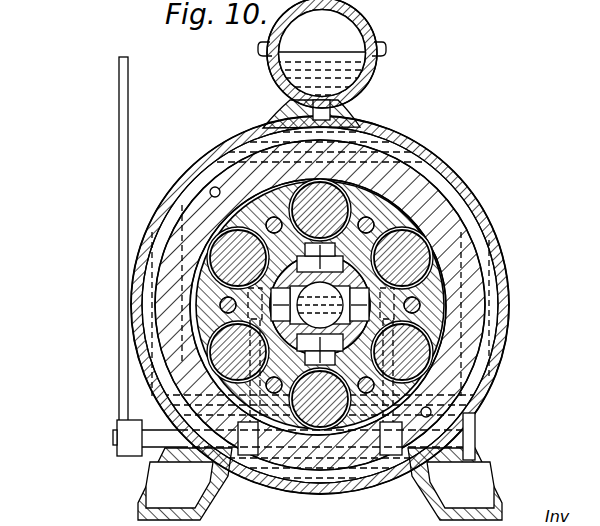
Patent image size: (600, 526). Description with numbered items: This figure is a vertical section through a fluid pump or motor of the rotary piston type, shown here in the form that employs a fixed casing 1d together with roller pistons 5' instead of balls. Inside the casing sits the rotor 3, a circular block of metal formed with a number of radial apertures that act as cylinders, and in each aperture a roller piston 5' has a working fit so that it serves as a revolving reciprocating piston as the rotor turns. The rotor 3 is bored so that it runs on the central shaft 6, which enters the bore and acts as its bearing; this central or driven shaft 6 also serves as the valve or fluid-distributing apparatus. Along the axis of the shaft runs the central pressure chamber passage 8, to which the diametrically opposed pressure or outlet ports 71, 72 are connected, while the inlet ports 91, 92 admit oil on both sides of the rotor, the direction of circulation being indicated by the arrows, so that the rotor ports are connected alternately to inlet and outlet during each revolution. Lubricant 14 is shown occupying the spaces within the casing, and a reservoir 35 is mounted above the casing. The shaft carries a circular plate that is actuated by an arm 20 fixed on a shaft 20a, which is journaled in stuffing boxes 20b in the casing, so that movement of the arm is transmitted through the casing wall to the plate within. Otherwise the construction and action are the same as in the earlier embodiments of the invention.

The fixed casing 1d is at (199, 160).
The lubricant 14 is at (372, 172).
The rotor 3 is at (217, 293).
The roller pistons 5' is at (375, 300).
The central shaft 6 is at (376, 262).
The central pressure chamber passage 8 is at (320, 305).
The upper block 91 is at (320, 257).
The inlet ports 92 is at (320, 349).
The right block 71 is at (359, 304).
The left block 72 is at (280, 304).
The arm 20 is at (119, 152).
The shaft 20a is at (117, 440).
The stuffing boxes 20b is at (494, 425).
The ring handle 35 is at (368, 27).